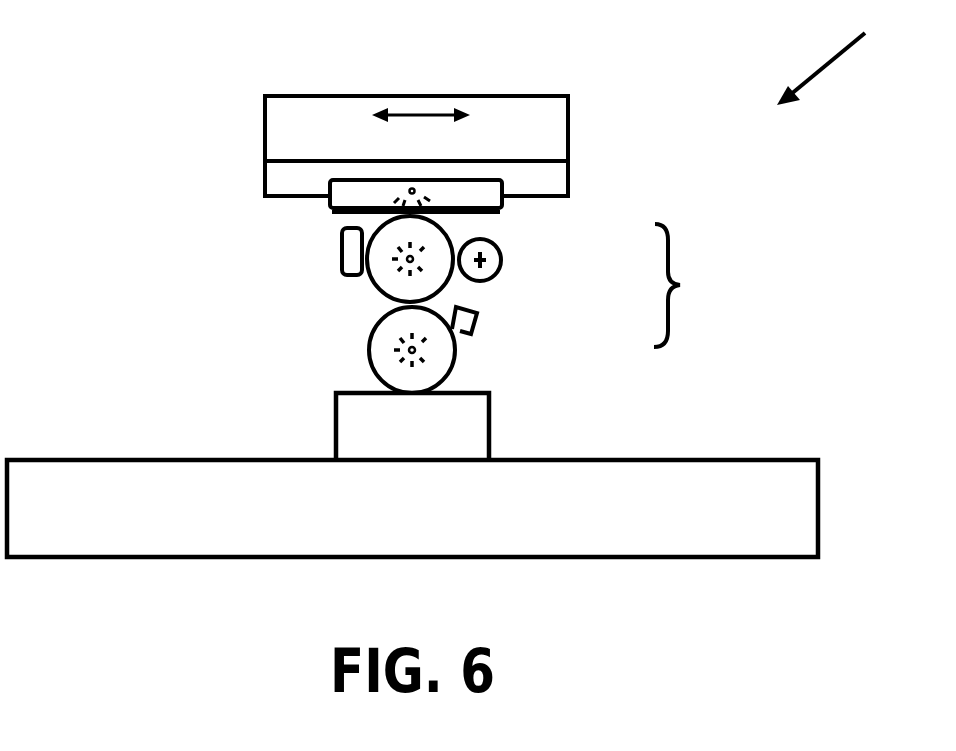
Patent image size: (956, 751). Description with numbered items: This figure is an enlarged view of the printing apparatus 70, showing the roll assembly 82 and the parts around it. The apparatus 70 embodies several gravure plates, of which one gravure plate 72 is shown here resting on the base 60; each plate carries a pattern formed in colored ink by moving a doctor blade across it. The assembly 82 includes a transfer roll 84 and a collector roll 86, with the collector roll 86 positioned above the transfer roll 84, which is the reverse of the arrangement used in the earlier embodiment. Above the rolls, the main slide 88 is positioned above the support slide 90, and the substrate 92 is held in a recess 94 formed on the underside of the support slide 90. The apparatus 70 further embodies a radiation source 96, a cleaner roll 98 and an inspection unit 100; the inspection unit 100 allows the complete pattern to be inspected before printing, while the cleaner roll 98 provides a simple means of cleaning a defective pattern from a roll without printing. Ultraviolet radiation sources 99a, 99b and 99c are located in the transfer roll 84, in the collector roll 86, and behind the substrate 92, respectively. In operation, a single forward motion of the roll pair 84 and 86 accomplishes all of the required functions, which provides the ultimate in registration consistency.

The base 60 is at (412, 508).
The apparatus 70 is at (812, 65).
The gravure plate 72 is at (412, 426).
The assembly 82 is at (697, 285).
The transfer roll 84 is at (380, 353).
The collector roll 86 is at (390, 278).
The main slide 88 is at (287, 137).
The support slide 90 is at (487, 193).
The substrate 92 is at (348, 214).
The recess 94 is at (335, 208).
The radiation source 96 is at (477, 318).
The cleaner roll 98 is at (500, 257).
The ultraviolet radiation source 99a is at (412, 350).
The ultraviolet radiation source 99b is at (410, 260).
The ultraviolet radiation source 99c is at (412, 192).
The inspection unit 100 is at (341, 255).